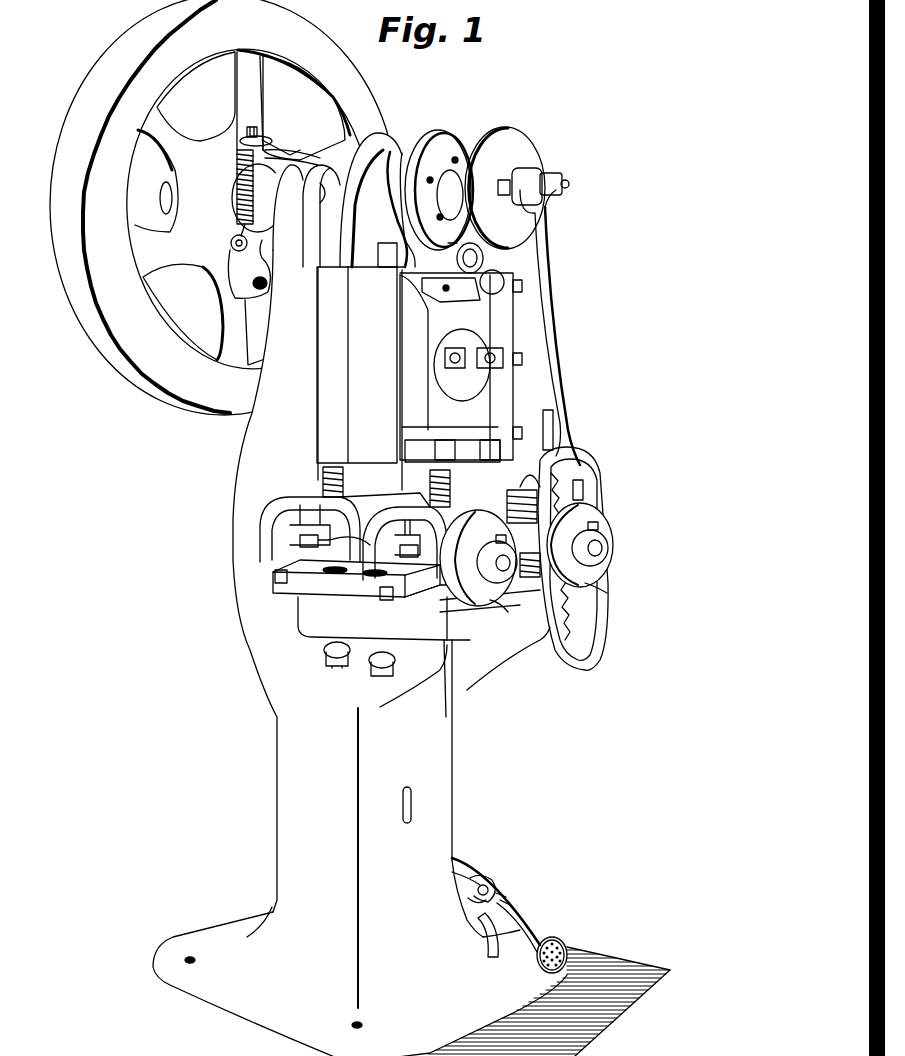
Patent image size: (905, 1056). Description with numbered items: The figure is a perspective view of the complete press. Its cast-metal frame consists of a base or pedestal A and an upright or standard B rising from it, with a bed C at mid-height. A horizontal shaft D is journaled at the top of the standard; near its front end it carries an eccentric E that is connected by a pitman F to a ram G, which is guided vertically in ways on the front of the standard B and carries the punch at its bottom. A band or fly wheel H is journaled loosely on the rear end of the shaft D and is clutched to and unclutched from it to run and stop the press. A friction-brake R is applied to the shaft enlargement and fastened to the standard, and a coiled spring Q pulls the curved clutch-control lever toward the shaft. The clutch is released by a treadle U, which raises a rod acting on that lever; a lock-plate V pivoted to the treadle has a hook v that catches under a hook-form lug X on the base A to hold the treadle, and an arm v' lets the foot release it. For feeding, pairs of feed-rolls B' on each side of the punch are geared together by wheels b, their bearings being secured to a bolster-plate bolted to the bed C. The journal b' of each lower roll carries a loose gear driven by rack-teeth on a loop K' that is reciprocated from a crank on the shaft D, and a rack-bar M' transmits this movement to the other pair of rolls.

The band or fly wheel H is at (62, 196).
The friction-brake R is at (242, 150).
The coiled spring Q is at (237, 194).
The upright or standard B is at (391, 570).
The base or pedestal A is at (411, 981).
The eccentric E is at (418, 144).
The horizontal shaft D is at (569, 184).
The pitman F is at (462, 272).
The ram G is at (461, 367).
The rack-bar M' is at (432, 597).
The bed C is at (388, 636).
The feed-rolls B' is at (436, 539).
The journal b' is at (546, 552).
The gear wheels b is at (525, 526).
The loop K' is at (586, 558).
The treadle U is at (509, 915).
The lock-plate V is at (493, 880).
The hook v is at (463, 905).
The arm or extension v' is at (510, 893).
The hook form lug X is at (478, 936).